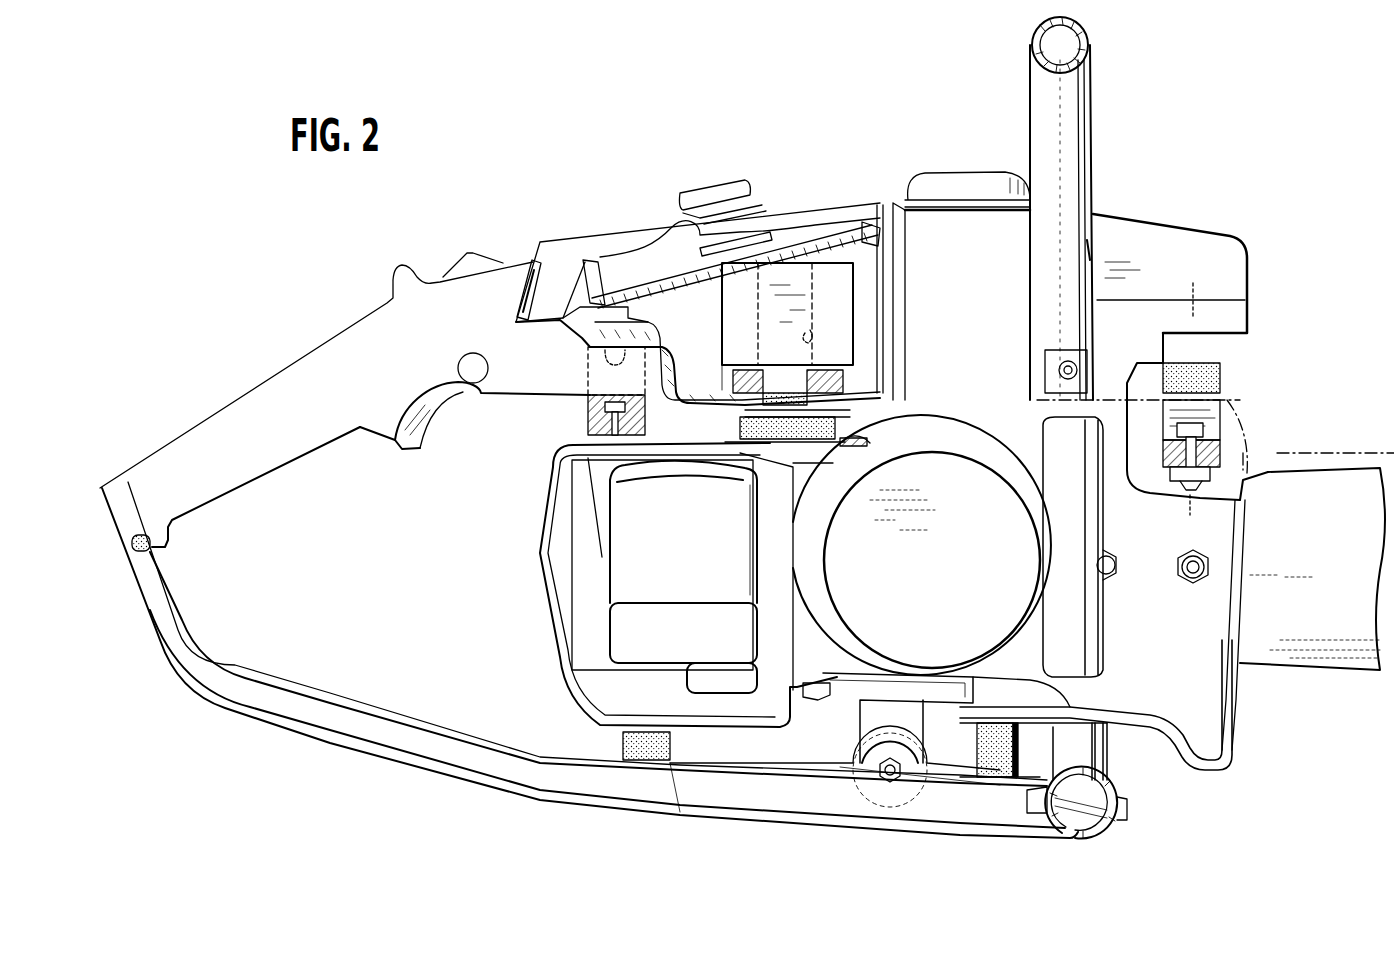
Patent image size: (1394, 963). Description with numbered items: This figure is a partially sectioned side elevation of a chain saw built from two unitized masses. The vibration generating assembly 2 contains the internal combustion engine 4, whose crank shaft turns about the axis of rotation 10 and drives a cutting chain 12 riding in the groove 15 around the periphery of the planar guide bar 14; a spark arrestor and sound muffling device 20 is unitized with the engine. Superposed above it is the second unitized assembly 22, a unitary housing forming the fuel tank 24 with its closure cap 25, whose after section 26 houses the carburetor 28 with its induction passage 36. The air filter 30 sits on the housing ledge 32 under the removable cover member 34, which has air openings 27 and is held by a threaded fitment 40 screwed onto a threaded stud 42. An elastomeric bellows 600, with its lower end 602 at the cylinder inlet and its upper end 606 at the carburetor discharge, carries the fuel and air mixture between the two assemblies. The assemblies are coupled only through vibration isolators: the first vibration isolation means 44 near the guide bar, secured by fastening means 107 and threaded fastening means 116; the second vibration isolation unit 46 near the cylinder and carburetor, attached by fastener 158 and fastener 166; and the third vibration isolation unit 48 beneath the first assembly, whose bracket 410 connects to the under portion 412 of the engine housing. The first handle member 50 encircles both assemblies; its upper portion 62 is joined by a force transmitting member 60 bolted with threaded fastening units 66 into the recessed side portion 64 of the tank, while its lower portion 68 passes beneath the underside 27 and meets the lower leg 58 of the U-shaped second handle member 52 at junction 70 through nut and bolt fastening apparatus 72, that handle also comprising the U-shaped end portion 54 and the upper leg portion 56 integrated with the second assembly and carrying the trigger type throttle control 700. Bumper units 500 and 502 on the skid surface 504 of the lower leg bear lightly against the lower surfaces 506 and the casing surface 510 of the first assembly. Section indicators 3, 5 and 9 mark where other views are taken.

The vibration generating assembly 2 is at (1262, 452).
The axis of rotation 10 is at (935, 560).
The cutting chain 12 is at (1347, 453).
The guide bar 14 is at (1321, 527).
The groove 15 is at (1318, 455).
The spark arrestor and sound muffling device 20 is at (570, 585).
The second unitized assembly 22 is at (1262, 248).
The fuel tank 24 is at (1248, 293).
The closure cap 25 is at (952, 178).
The after section 26 is at (545, 556).
The air openings 27 is at (525, 300).
The carburetor 28 is at (843, 293).
The air filter 30 is at (676, 287).
The housing ledge 32 is at (590, 280).
The removable cover member 34 is at (605, 238).
The induction passage 36 is at (812, 333).
The threaded fitment 40 is at (706, 190).
The threaded stud 42 is at (745, 230).
The first vibration isolation means 44 is at (1210, 412).
The second vibration isolation unit 46 is at (588, 405).
The third vibration isolation unit 48 is at (852, 752).
The first handle member 50 is at (1086, 40).
The second handle member 52 is at (238, 402).
The U-shaped end portion 54 is at (183, 622).
The upper leg portion 56 is at (318, 437).
The lower leg 58 is at (426, 722).
The force transmitting member 60 is at (1092, 188).
The upper portion 62 is at (1086, 62).
The recessed side portion 64 is at (1092, 258).
The threaded fastening units 66 is at (1068, 362).
The lower portion 68 is at (1080, 840).
The junction 70 is at (1110, 832).
The threaded nut and bolt fastening apparatus 72 is at (1127, 800).
The fastening means 107 is at (1215, 432).
The threaded fastening means 116 is at (1225, 378).
The fastener 158 is at (590, 425).
The fastener 166 is at (600, 355).
The bracket 410 is at (934, 702).
The under portion 412 is at (838, 692).
The bumper unit 500 is at (643, 755).
The bumper 502 is at (980, 775).
The surface 504 is at (693, 762).
The lower surfaces 506 is at (610, 732).
The casing surface 510 is at (1030, 725).
The elastomeric bellows 600 is at (848, 423).
The lower end 602 is at (868, 442).
The upper end 606 is at (900, 385).
The trigger type throttle control 700 is at (436, 418).
The section line 3- 3 is at (1162, 290).
The internal combustion engine 4 is at (620, 325).
The section line 5- 5 is at (858, 628).
The section line 9- 9 is at (786, 380).